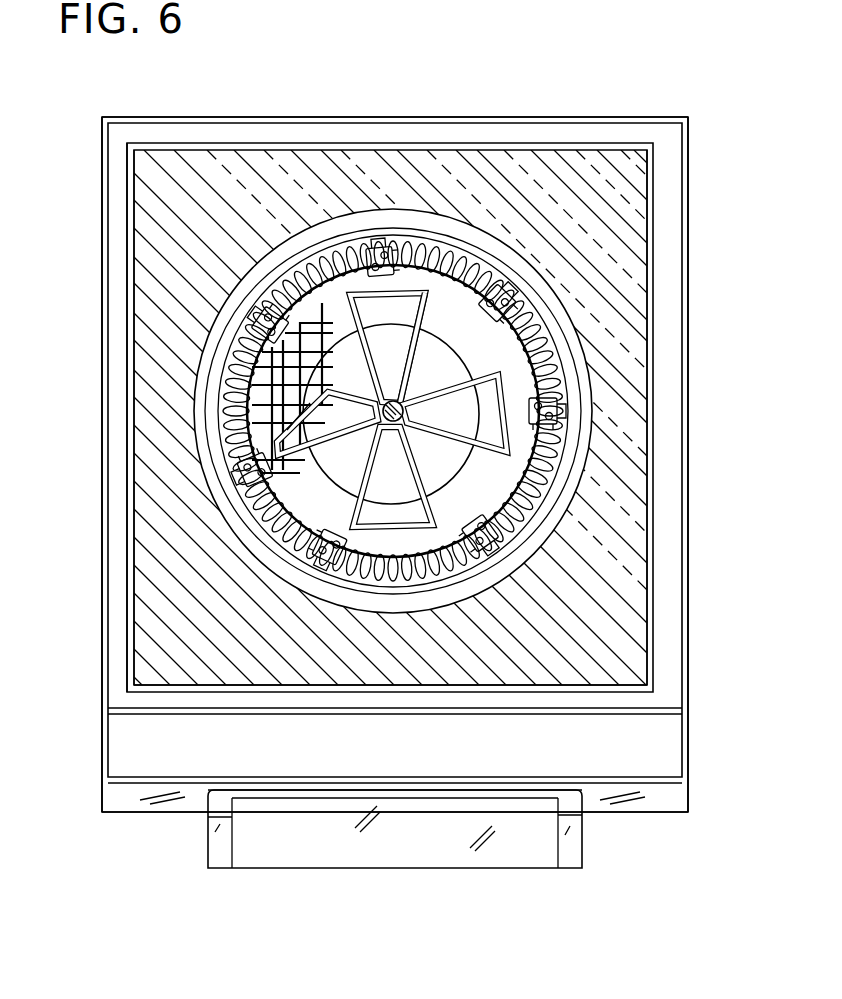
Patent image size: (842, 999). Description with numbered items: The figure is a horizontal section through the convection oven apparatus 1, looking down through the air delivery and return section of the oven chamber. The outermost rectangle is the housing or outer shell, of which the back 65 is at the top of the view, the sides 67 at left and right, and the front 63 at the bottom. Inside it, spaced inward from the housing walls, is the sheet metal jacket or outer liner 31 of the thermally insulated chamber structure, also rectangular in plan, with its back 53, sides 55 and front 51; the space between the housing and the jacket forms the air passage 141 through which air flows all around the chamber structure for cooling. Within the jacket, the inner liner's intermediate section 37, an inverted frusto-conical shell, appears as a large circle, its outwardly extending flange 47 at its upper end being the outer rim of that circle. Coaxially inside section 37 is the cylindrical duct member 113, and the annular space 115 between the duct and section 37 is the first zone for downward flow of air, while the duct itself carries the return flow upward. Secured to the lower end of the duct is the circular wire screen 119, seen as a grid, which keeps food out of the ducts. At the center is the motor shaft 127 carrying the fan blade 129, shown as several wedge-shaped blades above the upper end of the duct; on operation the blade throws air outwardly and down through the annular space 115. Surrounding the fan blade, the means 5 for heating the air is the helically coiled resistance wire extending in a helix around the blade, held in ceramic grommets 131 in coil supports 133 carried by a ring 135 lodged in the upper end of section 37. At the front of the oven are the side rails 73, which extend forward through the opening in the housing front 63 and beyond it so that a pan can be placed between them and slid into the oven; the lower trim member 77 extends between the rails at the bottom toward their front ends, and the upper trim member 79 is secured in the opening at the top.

The apparatus 1 is at (100, 232).
The means for heating the air 5 is at (576, 364).
The jacket 31 is at (128, 295).
The intermediate section 37 is at (550, 508).
The flange 47 is at (540, 535).
The front 51 is at (190, 690).
The back 53 is at (547, 143).
The sides 55 is at (128, 525).
The front 63 is at (123, 817).
The back 65 is at (242, 120).
The sides 67 is at (103, 343).
The side rails 73 is at (223, 864).
The lower trim member 77 is at (352, 855).
The upper trim member 79 is at (500, 786).
The cylindrical duct member 113 is at (470, 347).
The annular space 115 is at (493, 475).
The wire screen 119 is at (337, 313).
The shaft 127 is at (397, 430).
The fan blade 129 is at (450, 415).
The ceramic grommets 131 is at (438, 348).
The coil supports 133 is at (336, 532).
The ring 135 is at (432, 590).
The air passage 141 is at (410, 128).